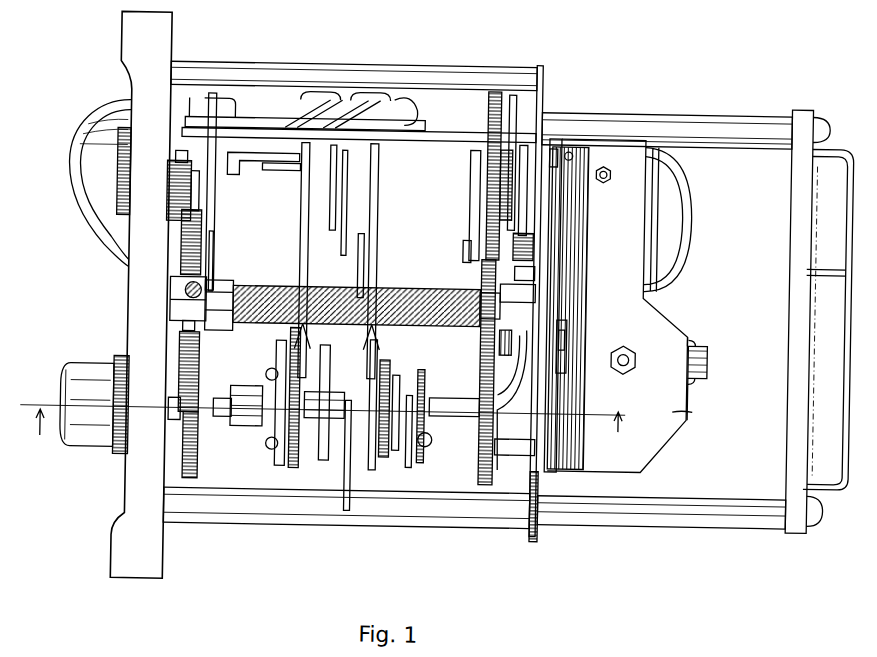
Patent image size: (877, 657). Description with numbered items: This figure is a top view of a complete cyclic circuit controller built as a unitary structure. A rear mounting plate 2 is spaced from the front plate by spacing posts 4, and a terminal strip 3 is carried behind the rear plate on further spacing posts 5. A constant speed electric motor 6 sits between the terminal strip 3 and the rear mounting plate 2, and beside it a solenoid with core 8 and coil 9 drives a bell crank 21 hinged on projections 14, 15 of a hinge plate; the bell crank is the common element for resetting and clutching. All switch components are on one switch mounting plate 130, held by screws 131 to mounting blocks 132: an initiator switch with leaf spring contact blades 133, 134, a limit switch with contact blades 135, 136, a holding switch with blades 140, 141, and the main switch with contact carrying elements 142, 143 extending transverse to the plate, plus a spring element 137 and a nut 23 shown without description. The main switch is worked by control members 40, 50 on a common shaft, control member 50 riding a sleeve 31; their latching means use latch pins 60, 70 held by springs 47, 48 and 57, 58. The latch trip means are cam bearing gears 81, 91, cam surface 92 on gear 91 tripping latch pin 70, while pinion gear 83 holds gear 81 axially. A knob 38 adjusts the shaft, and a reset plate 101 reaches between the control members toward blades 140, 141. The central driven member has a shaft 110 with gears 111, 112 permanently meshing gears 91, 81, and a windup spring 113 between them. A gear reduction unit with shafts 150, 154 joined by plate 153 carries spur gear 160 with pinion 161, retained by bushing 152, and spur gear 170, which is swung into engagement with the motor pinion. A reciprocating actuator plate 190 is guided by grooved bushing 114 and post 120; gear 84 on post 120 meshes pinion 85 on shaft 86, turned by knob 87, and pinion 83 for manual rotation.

The rear mounting plate 2 is at (540, 78).
The terminal strip 3 is at (836, 198).
The spacing posts 4 is at (343, 80).
The spacing posts 5 is at (689, 124).
The electric motor 6 is at (219, 100).
The core 8 is at (709, 361).
The coil 9 is at (693, 341).
The projection 14 is at (568, 347).
The projection 15 is at (554, 147).
The bell crank 21 is at (696, 408).
The nut 23 is at (638, 358).
The sleeve 31 is at (350, 432).
The knob 38 is at (81, 387).
The control member 40 is at (331, 507).
The spring 47 is at (268, 378).
The spring 48 is at (268, 450).
The control member 50 is at (380, 480).
The spring 57 is at (419, 393).
The spring 58 is at (427, 450).
The latch pin 60 is at (249, 432).
The latch pin 70 is at (436, 444).
The cam bearing gear 81 is at (186, 460).
The pinion gear 83 is at (178, 415).
The gear 84 is at (181, 261).
The pinion gear 85 is at (172, 205).
The shaft 86 is at (176, 197).
The knob 87 is at (80, 177).
The cam bearing gear 91 is at (489, 489).
The cam surface 92 is at (481, 372).
The reset plate 101 is at (352, 512).
The shaft 110 is at (500, 302).
The gear 111 is at (514, 343).
The gear 112 is at (182, 350).
The windup spring 113 is at (261, 289).
The grooved bushing 114 is at (182, 330).
The post 120 is at (170, 295).
The switch mounting plate 130 is at (449, 131).
The screws 131 is at (508, 110).
The mounting blocks 132 is at (520, 158).
The leaf spring contact blade 133 is at (228, 108).
The leaf spring contact blade 134 is at (296, 120).
The contact blade 135 is at (248, 165).
The contact blade 136 is at (268, 173).
The spring 137 is at (326, 117).
The leaf spring contact blade 140 is at (298, 173).
The leaf spring contact blade 141 is at (358, 196).
The contact carrying element 142 is at (303, 313).
The contact carrying element 143 is at (395, 296).
The shaft 150 is at (462, 250).
The bushing 152 is at (553, 225).
The plate 153 is at (468, 220).
The shaft 154 is at (476, 175).
The spur gear 160 is at (544, 287).
The pinion gear 161 is at (554, 259).
The spur gear 170 is at (486, 100).
The reciprocating actuator plate 190 is at (213, 233).